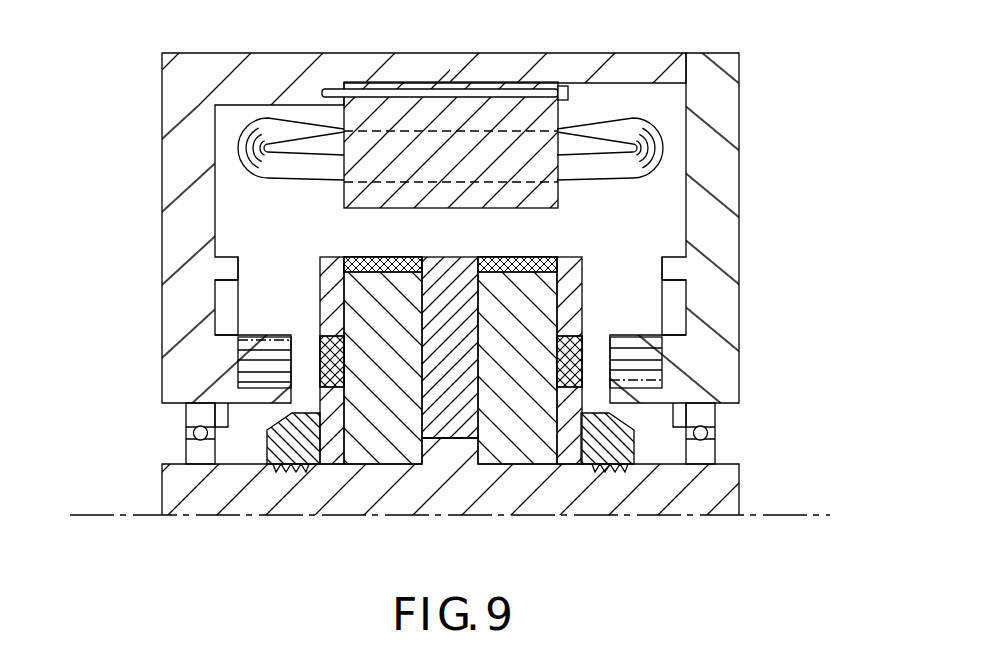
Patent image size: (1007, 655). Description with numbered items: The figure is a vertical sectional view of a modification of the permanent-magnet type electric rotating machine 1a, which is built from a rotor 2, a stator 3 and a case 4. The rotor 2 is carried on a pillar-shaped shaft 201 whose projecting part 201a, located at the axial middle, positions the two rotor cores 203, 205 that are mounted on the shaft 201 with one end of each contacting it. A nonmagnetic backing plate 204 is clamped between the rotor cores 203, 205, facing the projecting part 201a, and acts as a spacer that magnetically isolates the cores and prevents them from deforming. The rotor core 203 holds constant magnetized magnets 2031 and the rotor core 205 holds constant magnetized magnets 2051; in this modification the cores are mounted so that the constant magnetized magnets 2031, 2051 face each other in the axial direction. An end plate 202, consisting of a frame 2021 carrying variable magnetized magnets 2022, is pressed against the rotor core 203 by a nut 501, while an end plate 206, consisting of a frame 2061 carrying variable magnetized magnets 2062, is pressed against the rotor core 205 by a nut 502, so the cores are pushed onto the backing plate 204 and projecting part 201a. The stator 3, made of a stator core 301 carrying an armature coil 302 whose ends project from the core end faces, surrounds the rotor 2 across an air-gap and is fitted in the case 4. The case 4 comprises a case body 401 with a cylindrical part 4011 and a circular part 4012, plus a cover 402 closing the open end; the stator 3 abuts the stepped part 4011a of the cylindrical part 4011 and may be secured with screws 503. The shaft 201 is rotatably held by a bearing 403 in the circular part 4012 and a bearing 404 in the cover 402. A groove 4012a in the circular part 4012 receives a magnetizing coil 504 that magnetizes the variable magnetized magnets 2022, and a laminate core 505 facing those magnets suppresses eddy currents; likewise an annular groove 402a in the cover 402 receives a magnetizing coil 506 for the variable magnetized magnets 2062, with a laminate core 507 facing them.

The permanent-magnet type electric rotating machine 1a is at (766, 61).
The rotor 2 is at (487, 258).
The stator 3 is at (431, 80).
The case 4 is at (547, 52).
The shaft 201 is at (213, 502).
The projecting part 201a is at (458, 445).
The end plate 202 is at (320, 257).
The frame 2021 is at (320, 283).
The variable magnetized magnets 2022 is at (318, 345).
The rotor core 203 is at (363, 456).
The constant magnetized magnets 2031 is at (372, 258).
The backing plate 204 is at (440, 425).
The rotor core 205 is at (522, 450).
The constant magnetized magnets 2051 is at (528, 258).
The end plate 206 is at (583, 258).
The frame 2061 is at (577, 291).
The variable magnetized magnets 2062 is at (582, 346).
The stator core 301 is at (482, 98).
The armature coil 302 is at (277, 181).
The case body 401 is at (97, 62).
The cylindrical part 4011 is at (312, 74).
The stepped part 4011a is at (340, 88).
The circular part 4012 is at (163, 147).
The groove 4012a is at (217, 298).
The cover 402 is at (733, 173).
The annular groove 402a is at (687, 300).
The bearing 403 is at (187, 443).
The bearing 404 is at (712, 417).
The nut 501 is at (268, 445).
The nut 502 is at (634, 448).
The screws 503 is at (570, 93).
The magnetizing coil 504 is at (237, 267).
The laminate core 505 is at (257, 372).
The magnetizing coil 506 is at (660, 258).
The laminate core 507 is at (655, 375).